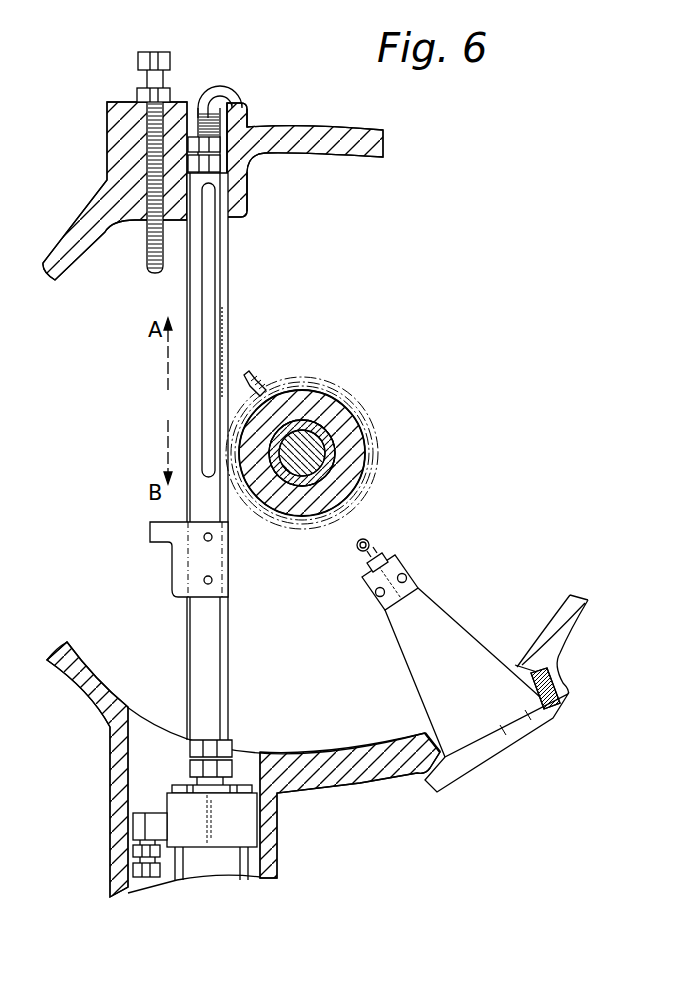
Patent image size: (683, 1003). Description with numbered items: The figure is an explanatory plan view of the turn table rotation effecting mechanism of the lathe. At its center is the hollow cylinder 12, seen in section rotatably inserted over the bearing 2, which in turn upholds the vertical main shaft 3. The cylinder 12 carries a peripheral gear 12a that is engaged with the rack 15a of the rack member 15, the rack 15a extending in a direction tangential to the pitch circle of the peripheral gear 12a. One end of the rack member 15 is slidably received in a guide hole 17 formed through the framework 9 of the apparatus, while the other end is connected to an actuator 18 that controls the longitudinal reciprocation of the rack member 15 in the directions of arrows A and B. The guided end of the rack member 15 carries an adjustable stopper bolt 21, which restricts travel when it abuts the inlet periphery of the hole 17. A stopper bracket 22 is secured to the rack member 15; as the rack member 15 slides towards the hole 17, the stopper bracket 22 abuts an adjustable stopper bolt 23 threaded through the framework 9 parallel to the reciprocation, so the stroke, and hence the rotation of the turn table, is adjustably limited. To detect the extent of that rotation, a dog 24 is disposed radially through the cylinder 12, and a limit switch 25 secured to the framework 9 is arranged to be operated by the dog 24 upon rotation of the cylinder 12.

The bearing 2 is at (315, 460).
The main shaft 3 is at (328, 474).
The framework 9 is at (240, 185).
The hollow cylinder 12 is at (320, 490).
The peripheral gear 12a is at (300, 540).
The rack member 15 is at (190, 290).
The rack 15a is at (243, 769).
The guide hole 17 is at (232, 110).
The actuator 18 is at (243, 828).
The adjustable stopper bolt 21 is at (212, 88).
The stopper bracket 22 is at (161, 533).
The adjustable stopper bolt 23 is at (147, 135).
The dog 24 is at (250, 374).
The limit switch 25 is at (368, 540).